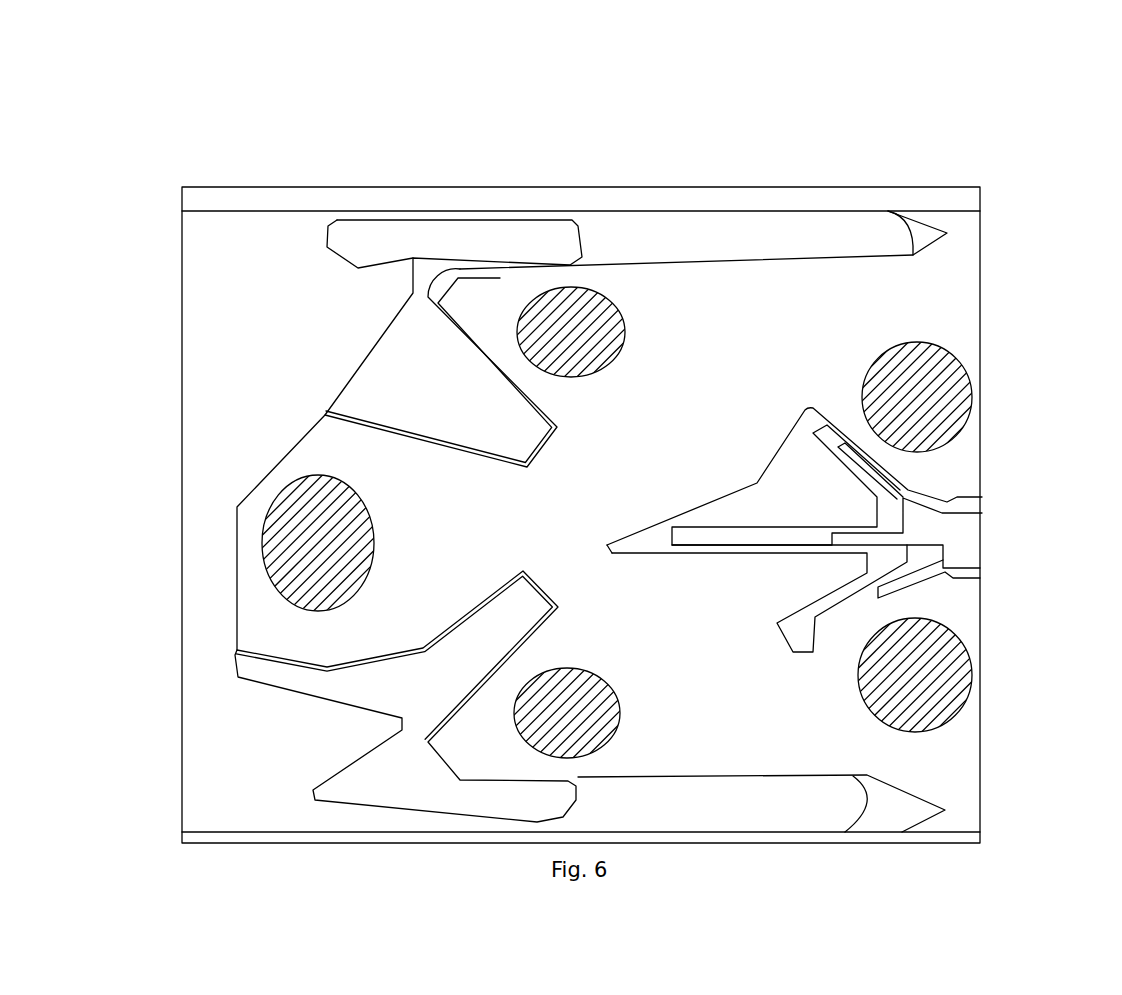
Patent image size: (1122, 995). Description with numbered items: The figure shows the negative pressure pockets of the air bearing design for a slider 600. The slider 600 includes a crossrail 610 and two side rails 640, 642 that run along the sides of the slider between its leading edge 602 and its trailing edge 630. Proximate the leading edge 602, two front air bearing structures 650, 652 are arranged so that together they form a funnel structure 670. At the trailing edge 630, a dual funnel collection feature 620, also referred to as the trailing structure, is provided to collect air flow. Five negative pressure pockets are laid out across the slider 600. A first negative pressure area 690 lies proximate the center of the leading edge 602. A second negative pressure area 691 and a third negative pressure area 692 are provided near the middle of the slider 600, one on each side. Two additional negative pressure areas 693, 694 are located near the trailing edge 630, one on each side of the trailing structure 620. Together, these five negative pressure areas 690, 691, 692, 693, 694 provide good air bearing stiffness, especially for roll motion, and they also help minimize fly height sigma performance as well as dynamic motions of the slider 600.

The slider 600 is at (183, 112).
The leading edge 602 is at (162, 420).
The crossrail 610 is at (206, 508).
The dual funnel collection feature 620 is at (747, 473).
The trailing edge 630 is at (988, 577).
The side rail 640 is at (735, 792).
The side rail 642 is at (682, 248).
The front air bearing structure 650 is at (455, 653).
The front air bearing structure 652 is at (427, 403).
The funnel structure 670 is at (503, 518).
The first negative pressure area 690 is at (343, 533).
The second negative pressure area 691 is at (585, 333).
The third negative pressure area 692 is at (580, 707).
The negative pressure area 693 is at (913, 665).
The negative pressure area 694 is at (932, 387).